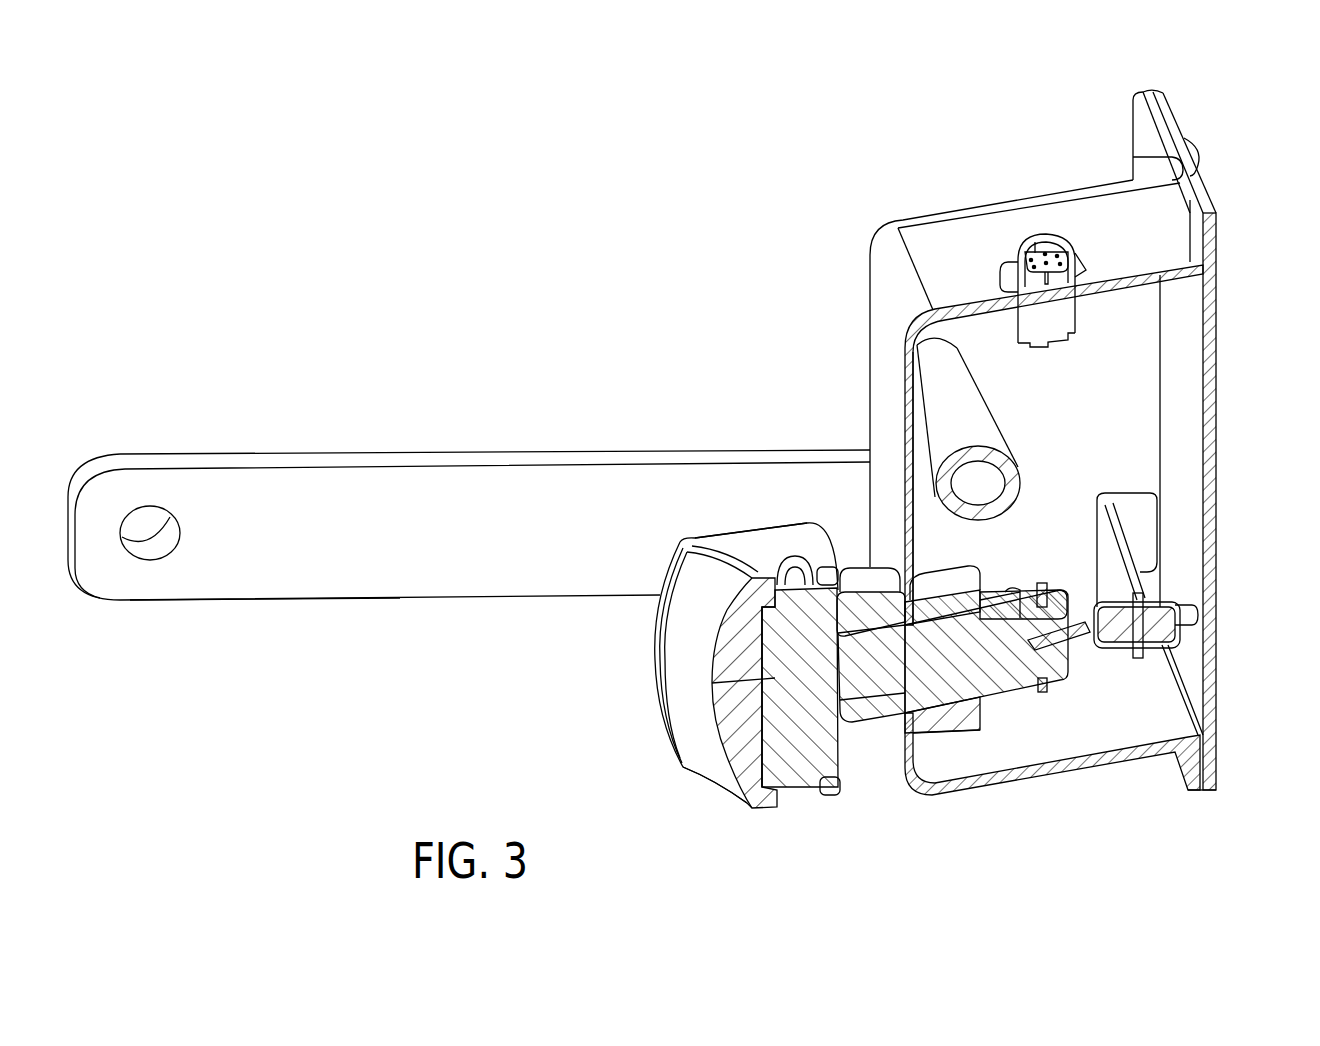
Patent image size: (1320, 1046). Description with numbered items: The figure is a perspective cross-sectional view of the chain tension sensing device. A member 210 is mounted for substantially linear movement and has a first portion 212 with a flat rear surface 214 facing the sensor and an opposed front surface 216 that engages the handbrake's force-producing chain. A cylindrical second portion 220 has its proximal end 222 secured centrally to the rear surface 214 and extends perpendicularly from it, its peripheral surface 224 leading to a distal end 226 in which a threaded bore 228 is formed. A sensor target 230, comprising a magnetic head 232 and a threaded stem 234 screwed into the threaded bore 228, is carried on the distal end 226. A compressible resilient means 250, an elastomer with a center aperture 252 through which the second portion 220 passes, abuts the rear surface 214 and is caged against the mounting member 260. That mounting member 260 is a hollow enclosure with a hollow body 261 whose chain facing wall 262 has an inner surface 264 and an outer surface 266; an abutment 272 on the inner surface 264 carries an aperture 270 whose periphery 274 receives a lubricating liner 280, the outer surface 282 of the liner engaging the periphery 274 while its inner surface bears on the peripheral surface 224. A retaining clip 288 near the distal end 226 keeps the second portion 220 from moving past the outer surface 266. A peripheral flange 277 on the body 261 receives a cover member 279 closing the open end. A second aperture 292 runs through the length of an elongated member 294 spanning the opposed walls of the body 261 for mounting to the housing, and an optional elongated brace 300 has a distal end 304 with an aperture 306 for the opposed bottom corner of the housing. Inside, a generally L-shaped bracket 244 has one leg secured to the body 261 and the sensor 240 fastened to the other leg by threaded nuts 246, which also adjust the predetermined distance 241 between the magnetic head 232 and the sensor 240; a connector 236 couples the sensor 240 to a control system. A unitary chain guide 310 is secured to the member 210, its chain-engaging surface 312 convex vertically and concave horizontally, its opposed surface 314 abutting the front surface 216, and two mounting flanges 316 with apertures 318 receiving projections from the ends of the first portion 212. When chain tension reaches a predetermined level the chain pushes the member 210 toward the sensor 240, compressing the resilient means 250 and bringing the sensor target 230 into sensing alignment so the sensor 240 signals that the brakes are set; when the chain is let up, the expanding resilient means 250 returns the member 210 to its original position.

The member 210 is at (668, 775).
The first portion 212 is at (802, 737).
The rear surface 214 is at (838, 745).
The front surface 216 is at (800, 572).
The second portion 220 is at (1042, 755).
The proximal end 222 is at (853, 700).
The peripheral surface 224 is at (957, 697).
The distal end 226 is at (1048, 600).
The threaded bore 228 is at (1018, 610).
The sensor target 230 is at (1108, 686).
The magnetic head 232 is at (1097, 642).
The threaded stem 234 is at (1060, 655).
The connector 236 is at (1055, 232).
The sensor 240 is at (1170, 628).
The predetermined distance 241 is at (1139, 660).
The L-shaped bracket 244 is at (1125, 497).
The threaded nuts 246 is at (1162, 585).
The compressible resilient means 250 is at (875, 740).
The center aperture 252 is at (871, 602).
The mounting member 260 is at (928, 180).
The hollow body 261 is at (872, 320).
The chain facing wall 262 is at (880, 380).
The inner surface 264 is at (915, 490).
The outer surface 266 is at (883, 425).
The aperture 270 is at (975, 590).
The abutment 272 is at (940, 587).
The periphery 274 is at (918, 695).
The peripheral flange 277 is at (1140, 140).
The cover member 279 is at (1215, 345).
The lubricating liner 280 is at (992, 703).
The outer surface 282 is at (943, 607).
The retaining ring or clip 288 is at (1022, 590).
The second aperture 292 is at (998, 496).
The elongated member 294 is at (968, 402).
The elongated brace 300 is at (411, 453).
The distal end 304 is at (230, 580).
The aperture 306 is at (168, 533).
The chain guide 310 is at (656, 658).
The chain-engaging surface 312 is at (693, 613).
The opposed surface 314 is at (768, 673).
The mounting flanges 316 is at (735, 548).
The apertures 318 is at (790, 568).